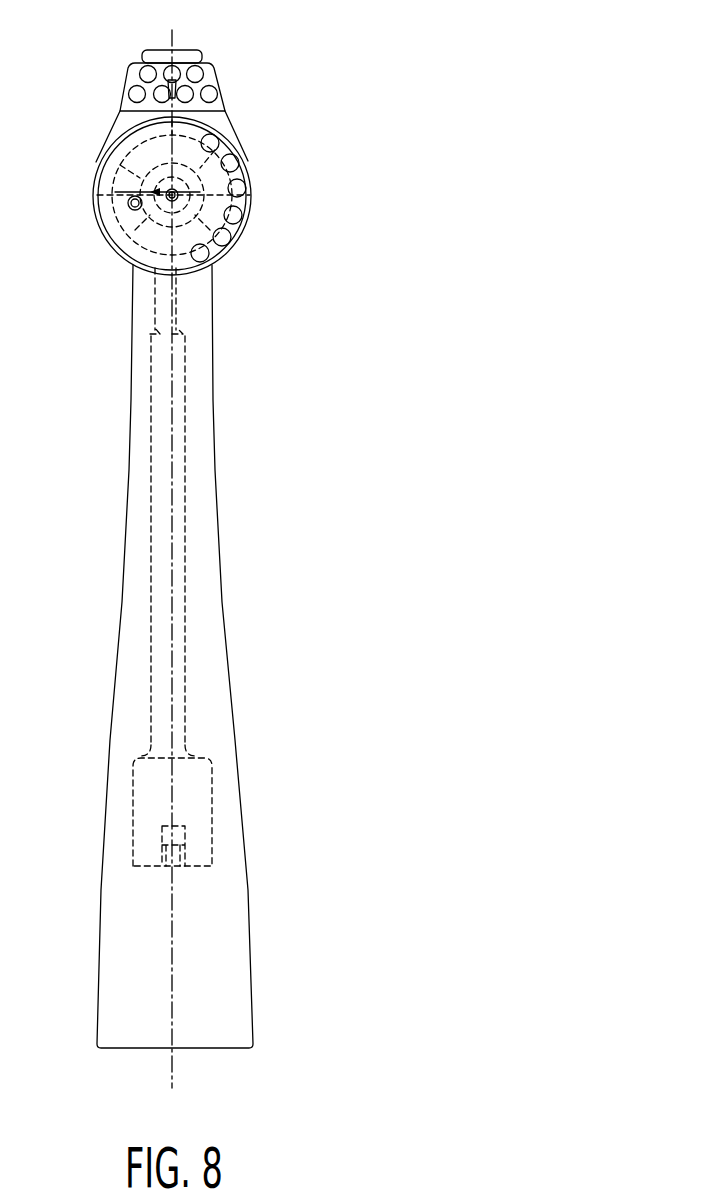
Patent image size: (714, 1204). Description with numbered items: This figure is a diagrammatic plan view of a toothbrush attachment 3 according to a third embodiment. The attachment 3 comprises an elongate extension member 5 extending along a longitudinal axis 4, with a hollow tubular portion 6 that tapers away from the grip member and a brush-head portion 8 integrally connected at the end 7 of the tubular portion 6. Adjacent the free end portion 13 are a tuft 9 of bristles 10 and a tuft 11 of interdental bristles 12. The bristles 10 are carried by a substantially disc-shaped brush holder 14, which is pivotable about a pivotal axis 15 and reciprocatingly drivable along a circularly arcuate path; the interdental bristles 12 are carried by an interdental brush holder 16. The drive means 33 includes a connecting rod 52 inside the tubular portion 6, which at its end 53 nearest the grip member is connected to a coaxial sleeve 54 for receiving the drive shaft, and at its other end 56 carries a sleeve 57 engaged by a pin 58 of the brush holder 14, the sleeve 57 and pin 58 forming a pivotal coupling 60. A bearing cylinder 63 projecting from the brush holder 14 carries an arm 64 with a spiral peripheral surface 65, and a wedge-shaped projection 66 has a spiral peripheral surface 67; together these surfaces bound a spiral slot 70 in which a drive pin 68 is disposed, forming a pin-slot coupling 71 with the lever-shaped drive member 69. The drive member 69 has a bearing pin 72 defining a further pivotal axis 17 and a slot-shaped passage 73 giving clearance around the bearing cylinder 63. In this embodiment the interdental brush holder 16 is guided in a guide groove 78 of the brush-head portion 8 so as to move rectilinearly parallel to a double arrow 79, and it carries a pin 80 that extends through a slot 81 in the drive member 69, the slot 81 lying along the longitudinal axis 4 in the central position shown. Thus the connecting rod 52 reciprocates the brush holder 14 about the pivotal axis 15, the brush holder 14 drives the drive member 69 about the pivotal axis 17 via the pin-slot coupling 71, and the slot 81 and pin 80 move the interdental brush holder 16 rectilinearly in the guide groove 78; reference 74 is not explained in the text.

The attachment 3 is at (300, 396).
The longitudinal axis 4 is at (170, 1068).
The extension member 5 is at (121, 602).
The hollow tubular portion 6 is at (215, 556).
The end of the tubular portion 7 is at (137, 278).
The brush-head portion 8 is at (112, 258).
The tuft of bristles 9 is at (242, 125).
The bristles 10 is at (245, 142).
The tuft of interdental bristles 11 is at (212, 66).
The interdental bristles 12 is at (128, 84).
The free end portion 13 is at (197, 52).
The brush holder 14 is at (115, 122).
The pivotal axis 15 is at (92, 184).
The interdental brush holder 16 is at (137, 66).
The pivotal axis 17 is at (180, 280).
The drive means 33 is at (189, 385).
The connecting rod 52 is at (150, 462).
The end of the connecting rod 53 is at (190, 724).
The coaxial sleeve 54 is at (136, 833).
The other end of the connecting rod 56 is at (122, 240).
The sleeve 57 is at (92, 200).
The pin 58 is at (106, 212).
The pivotal coupling 60 is at (92, 226).
The bearing cylinder 63 is at (112, 168).
The arm 64 is at (122, 140).
The peripheral surface 65 is at (256, 178).
The wedge-shaped projection 66 is at (232, 247).
The peripheral surface 67 is at (244, 228).
The drive pin 68 is at (250, 198).
The drive member 69 is at (225, 260).
The slot 70 is at (248, 136).
The pin-slot coupling 71 is at (216, 274).
The bearing pin 72 is at (134, 278).
The slot-shaped passage 73 is at (100, 160).
The wall 74 is at (116, 115).
The guide groove 78 is at (228, 110).
The double arrow 79 is at (317, 91).
The pin 80 is at (157, 52).
The slot 81 is at (183, 52).